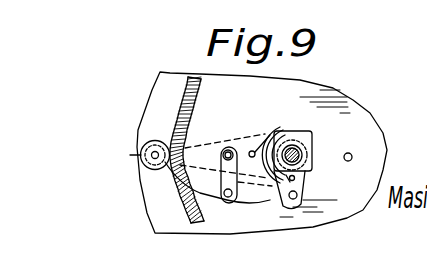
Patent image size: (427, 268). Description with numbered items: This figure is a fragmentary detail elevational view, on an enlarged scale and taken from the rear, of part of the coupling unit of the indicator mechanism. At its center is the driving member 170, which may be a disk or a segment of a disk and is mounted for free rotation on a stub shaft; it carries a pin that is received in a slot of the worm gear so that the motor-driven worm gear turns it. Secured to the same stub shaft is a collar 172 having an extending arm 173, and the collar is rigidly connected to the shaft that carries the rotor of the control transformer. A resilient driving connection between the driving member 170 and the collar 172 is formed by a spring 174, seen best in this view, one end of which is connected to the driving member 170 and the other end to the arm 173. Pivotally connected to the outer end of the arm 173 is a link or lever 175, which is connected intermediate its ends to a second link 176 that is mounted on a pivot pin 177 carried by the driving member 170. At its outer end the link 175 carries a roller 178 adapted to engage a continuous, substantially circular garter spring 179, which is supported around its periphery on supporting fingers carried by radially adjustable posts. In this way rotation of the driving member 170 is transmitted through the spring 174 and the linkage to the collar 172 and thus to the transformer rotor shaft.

The driving member 170 is at (353, 107).
The collar 172 is at (300, 153).
The arm 173 is at (305, 180).
The spring 174 is at (255, 132).
The link 175 is at (253, 204).
The second link 176 is at (220, 162).
The pivot pin 177 is at (232, 150).
The roller 178 is at (143, 143).
The garter spring 179 is at (184, 104).